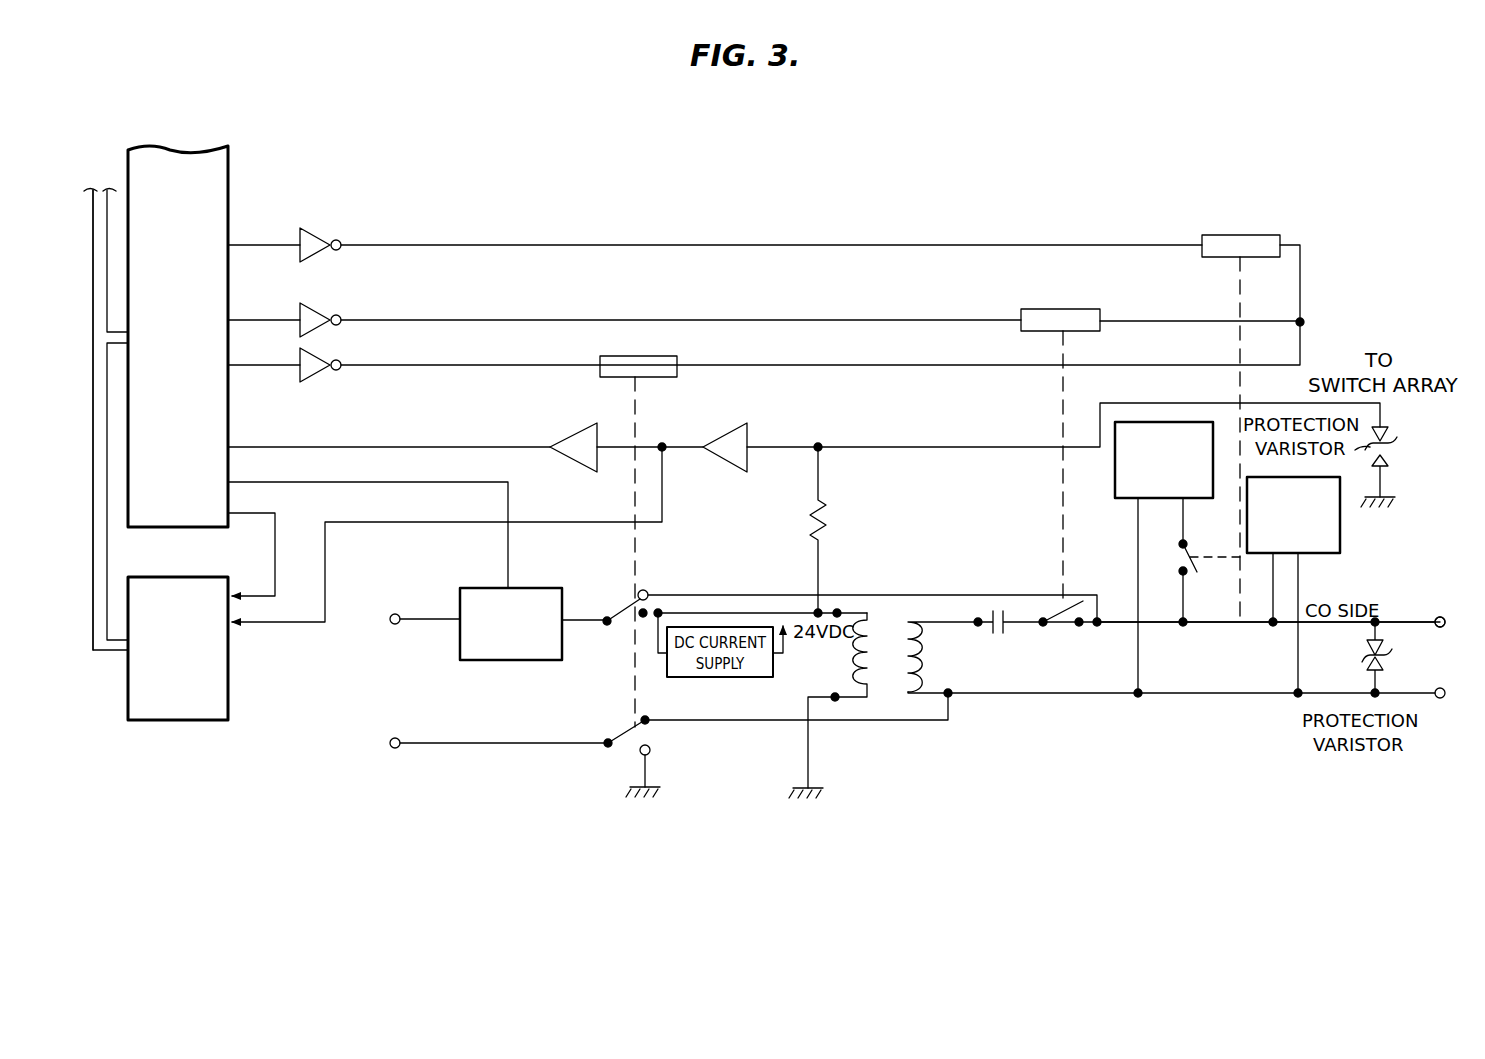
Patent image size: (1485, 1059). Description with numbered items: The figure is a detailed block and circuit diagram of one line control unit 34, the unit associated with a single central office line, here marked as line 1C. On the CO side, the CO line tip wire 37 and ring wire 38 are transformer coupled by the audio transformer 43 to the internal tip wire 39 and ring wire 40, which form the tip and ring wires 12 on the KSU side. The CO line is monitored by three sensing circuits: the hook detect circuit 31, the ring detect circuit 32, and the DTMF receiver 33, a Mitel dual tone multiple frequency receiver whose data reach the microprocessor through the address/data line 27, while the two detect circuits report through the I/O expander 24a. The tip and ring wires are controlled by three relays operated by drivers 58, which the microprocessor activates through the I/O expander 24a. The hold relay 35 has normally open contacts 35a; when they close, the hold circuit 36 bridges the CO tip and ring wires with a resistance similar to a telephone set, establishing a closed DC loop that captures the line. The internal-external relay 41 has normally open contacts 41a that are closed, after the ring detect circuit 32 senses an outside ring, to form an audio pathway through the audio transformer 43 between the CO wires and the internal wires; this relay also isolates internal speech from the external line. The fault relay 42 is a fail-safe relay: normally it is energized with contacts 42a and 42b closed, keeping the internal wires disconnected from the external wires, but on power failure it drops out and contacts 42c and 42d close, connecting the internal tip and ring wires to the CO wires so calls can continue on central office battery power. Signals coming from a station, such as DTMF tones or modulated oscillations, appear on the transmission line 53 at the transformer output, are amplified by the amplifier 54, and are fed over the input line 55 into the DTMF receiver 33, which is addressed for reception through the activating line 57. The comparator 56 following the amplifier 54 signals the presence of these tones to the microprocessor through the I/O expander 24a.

The line control unit 34 is at (897, 158).
The I/O expander 24a is at (240, 192).
The drivers 58 is at (338, 233).
The hold relay 35 is at (1290, 237).
The internal-external relay 41 is at (1035, 330).
The fault relay 42 is at (683, 362).
The comparator 56 is at (590, 473).
The amplifier 54 is at (716, 437).
The transmission line 53 is at (828, 460).
The activating line 57 is at (272, 530).
The input line 55 is at (334, 533).
The DTMF receiver 33 is at (218, 722).
The address/data line 27 is at (108, 558).
The tip and ring wires on the KSU side 12 is at (392, 684).
The internal ring wire 40 is at (430, 615).
The internal tip wire 39 is at (404, 739).
The hook detect circuit 31 is at (530, 588).
The fault relay contact 42a is at (647, 588).
The fault relay contact 42b is at (644, 716).
The fault relay contact 42c is at (640, 622).
The fault relay contact 42d is at (656, 752).
The audio transformer 43 is at (914, 618).
The internal-external relay contacts 41a is at (1104, 608).
The CO line tip wire 37 is at (1190, 698).
The hold circuit 36 is at (1133, 504).
The hold relay contacts 35a is at (1189, 616).
The CO line ring wire 38 is at (1196, 628).
The ring detect circuit 32 is at (1336, 530).
The central office line 1C is at (1425, 658).